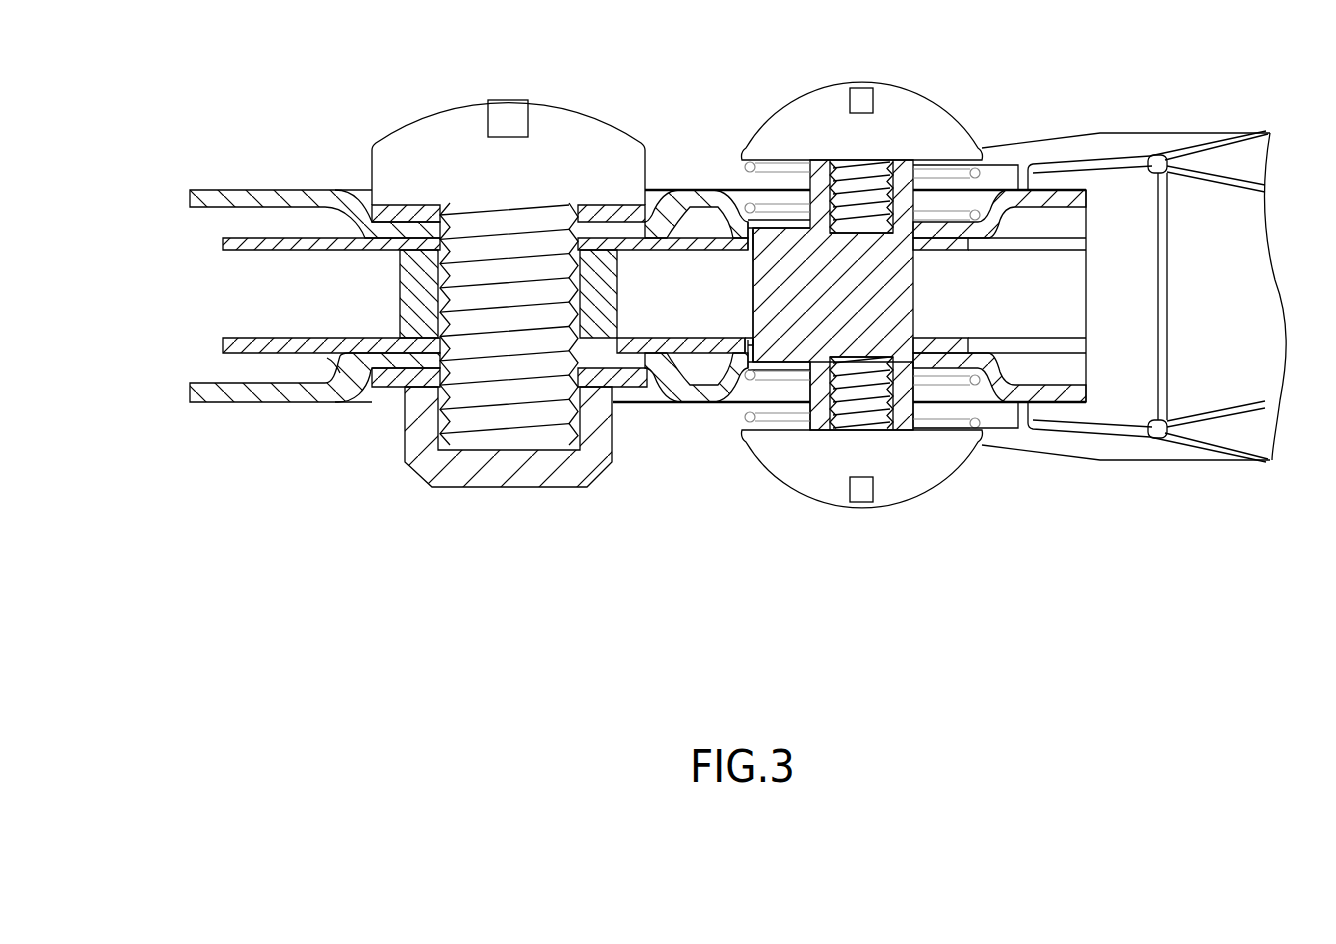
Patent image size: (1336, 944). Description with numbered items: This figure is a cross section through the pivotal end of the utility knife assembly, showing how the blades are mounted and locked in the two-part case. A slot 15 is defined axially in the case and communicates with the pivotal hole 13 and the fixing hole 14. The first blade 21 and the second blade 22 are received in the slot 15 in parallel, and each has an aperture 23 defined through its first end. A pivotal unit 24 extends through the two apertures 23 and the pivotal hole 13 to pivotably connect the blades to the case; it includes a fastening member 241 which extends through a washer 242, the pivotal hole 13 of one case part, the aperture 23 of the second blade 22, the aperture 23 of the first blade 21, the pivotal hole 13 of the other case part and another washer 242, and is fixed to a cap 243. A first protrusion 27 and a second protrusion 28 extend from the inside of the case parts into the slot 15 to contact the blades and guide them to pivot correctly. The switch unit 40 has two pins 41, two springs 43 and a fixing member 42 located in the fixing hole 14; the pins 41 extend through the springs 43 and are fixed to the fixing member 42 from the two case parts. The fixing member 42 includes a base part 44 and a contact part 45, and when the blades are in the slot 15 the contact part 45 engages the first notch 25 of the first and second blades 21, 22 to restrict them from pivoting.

The pivotal hole 13 is at (448, 222).
The fixing hole 14 is at (749, 228).
The slot 15 is at (196, 217).
The first blade 21 is at (222, 345).
The second blade 22 is at (222, 245).
The aperture 23 is at (437, 250).
The pivotal unit 24 is at (522, 265).
The fastening member 241 is at (588, 118).
The washer 242 is at (623, 210).
The cap 243 is at (600, 465).
The first notch 25 is at (748, 337).
The first protrusion 27 is at (978, 232).
The second protrusion 28 is at (352, 355).
The switch unit 40 is at (977, 305).
The pin 41 is at (905, 100).
The fixing member 42 is at (835, 355).
The spring 43 is at (748, 167).
The base part 44 is at (820, 413).
The contact part 45 is at (755, 278).